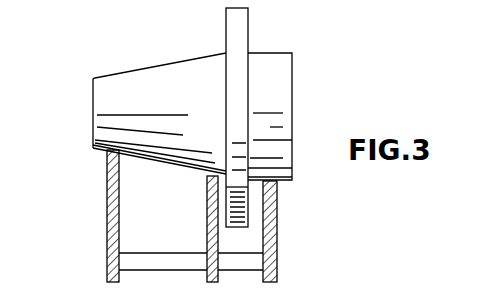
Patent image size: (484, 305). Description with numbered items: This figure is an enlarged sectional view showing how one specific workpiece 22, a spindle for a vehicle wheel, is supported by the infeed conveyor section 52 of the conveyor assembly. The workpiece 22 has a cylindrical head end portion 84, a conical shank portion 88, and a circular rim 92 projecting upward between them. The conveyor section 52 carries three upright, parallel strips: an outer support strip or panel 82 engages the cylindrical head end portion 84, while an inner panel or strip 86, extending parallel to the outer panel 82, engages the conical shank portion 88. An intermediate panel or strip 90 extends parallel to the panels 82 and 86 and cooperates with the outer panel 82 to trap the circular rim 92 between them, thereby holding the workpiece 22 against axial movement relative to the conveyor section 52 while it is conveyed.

The workpiece 22 is at (298, 48).
The infeed conveyor section 52 is at (106, 193).
The outer support strip or panel 82 is at (277, 230).
The cylindrical head end portion 84 is at (273, 100).
The inner panel or strip 86 is at (107, 215).
The conical shank portion 88 is at (115, 102).
The intermediate panel or strip 90 is at (207, 222).
The circular rim 92 is at (228, 33).